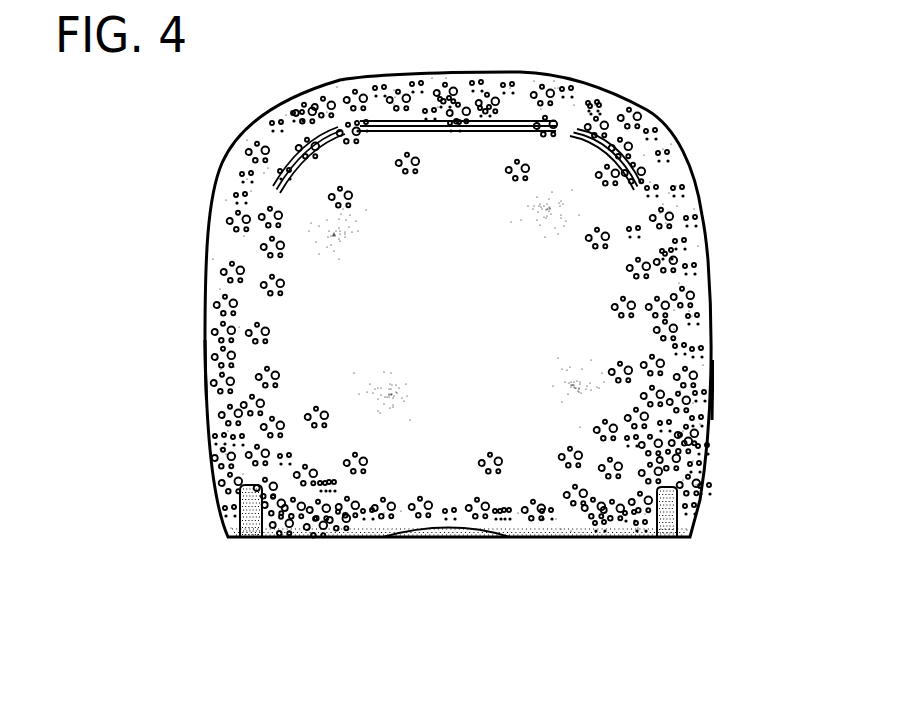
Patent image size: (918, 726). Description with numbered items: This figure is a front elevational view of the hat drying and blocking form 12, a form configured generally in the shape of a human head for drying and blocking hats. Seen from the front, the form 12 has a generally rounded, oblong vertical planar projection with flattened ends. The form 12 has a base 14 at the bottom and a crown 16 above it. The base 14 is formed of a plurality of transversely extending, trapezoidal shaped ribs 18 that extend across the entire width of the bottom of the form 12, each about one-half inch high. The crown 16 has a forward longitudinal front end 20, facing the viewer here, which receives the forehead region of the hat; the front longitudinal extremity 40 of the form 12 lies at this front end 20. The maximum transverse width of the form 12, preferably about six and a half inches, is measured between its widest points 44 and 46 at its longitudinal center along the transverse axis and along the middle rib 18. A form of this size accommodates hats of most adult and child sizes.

The hat drying and blocking form 12 is at (172, 282).
The base 14 is at (565, 523).
The crown 16 is at (670, 196).
The ribs 18 is at (223, 517).
The front end 20 is at (588, 275).
The longitudinal extremity 40 is at (457, 311).
The widest point 44 is at (712, 390).
The widest point 46 is at (205, 378).